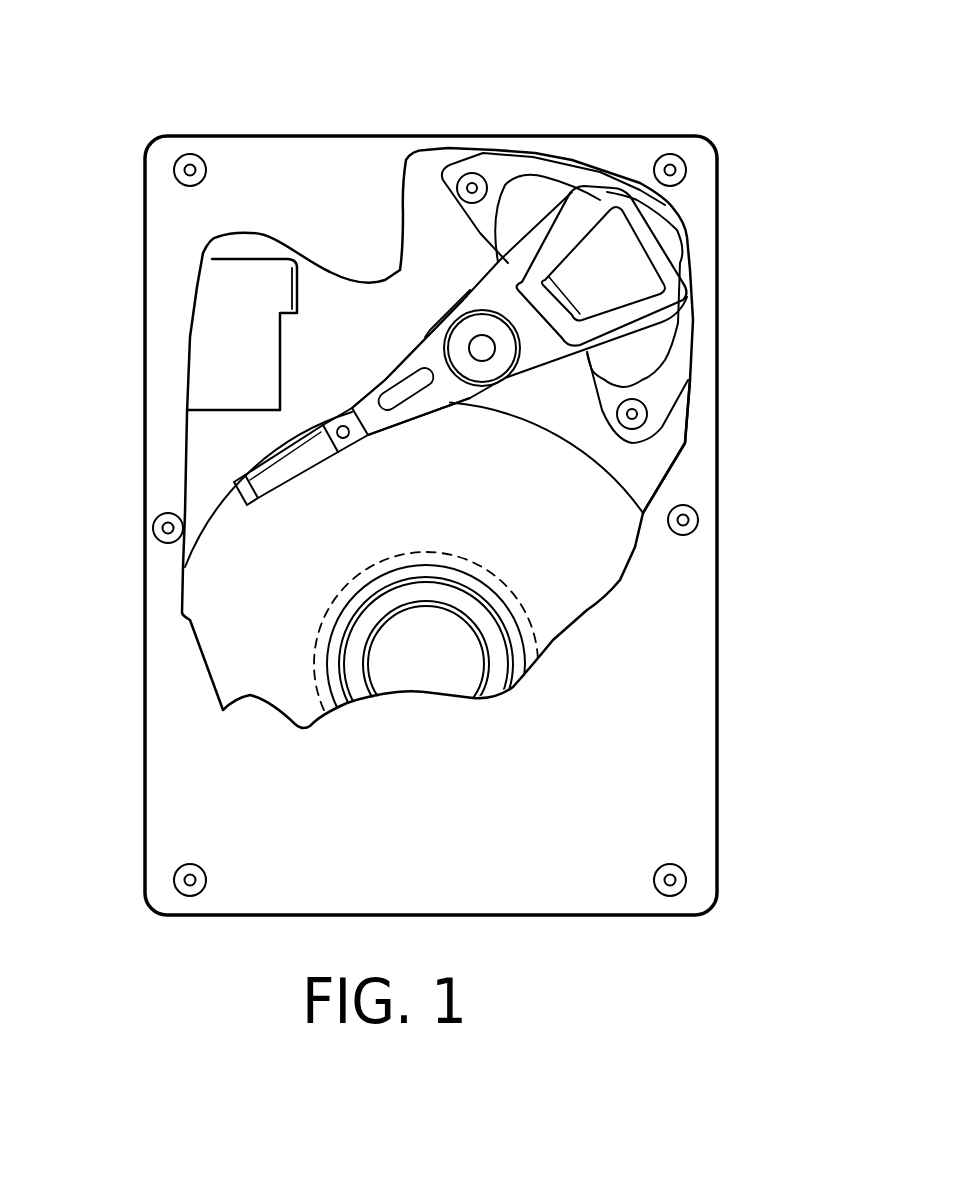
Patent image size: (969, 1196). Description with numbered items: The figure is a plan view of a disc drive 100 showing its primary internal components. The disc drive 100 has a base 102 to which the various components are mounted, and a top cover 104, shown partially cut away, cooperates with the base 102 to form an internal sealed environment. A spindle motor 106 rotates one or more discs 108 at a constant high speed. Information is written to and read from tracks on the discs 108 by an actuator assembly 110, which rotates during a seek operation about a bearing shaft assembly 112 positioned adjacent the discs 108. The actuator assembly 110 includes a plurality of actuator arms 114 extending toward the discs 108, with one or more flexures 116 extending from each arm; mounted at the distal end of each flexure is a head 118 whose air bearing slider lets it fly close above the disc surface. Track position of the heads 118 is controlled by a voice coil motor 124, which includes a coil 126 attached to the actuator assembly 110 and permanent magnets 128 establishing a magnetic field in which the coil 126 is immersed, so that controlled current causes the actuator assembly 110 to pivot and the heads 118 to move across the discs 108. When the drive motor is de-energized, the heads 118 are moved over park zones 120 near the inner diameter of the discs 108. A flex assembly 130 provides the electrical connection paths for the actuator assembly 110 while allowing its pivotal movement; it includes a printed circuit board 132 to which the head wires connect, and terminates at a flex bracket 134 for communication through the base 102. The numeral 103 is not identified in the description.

The disc drive 100 is at (188, 92).
The base 102 is at (213, 473).
The cover edge / direction of rotation arrow 103 is at (658, 464).
The top cover 104 is at (193, 758).
The spindle motor 106 is at (428, 672).
The discs 108 is at (590, 580).
The actuator assembly 110 is at (463, 420).
The bearing shaft assembly 112 is at (497, 360).
The actuator arms 114 is at (417, 408).
The flexures 116 is at (290, 467).
The head 118 is at (242, 496).
The park zones 120 is at (313, 656).
The voice coil motor 124 is at (515, 143).
The coil 126 is at (663, 262).
The permanent magnets 128 is at (513, 220).
The flex assembly 130 is at (398, 348).
The printed circuit board 132 is at (438, 305).
The flex bracket 134 is at (228, 348).